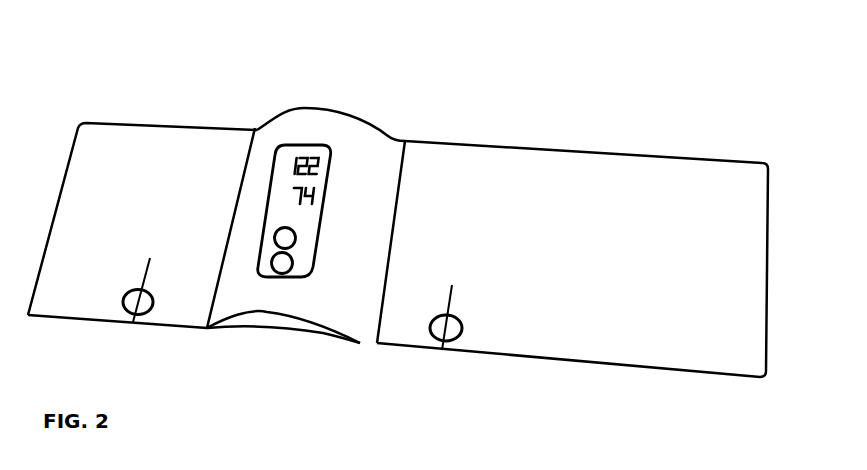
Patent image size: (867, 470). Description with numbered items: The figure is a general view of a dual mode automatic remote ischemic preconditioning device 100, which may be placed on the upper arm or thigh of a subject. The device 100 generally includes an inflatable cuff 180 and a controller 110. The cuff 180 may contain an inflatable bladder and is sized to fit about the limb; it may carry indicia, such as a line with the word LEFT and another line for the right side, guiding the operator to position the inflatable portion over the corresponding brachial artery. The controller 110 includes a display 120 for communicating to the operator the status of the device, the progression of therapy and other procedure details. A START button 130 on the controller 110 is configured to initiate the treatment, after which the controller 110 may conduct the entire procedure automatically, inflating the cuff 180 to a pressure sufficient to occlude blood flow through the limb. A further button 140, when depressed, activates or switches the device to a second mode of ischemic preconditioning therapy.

The device 100 is at (568, 116).
The controller 110 is at (380, 130).
The display 120 is at (290, 140).
The START button 130 is at (271, 263).
The button 140 is at (274, 237).
The inflatable cuff 180 is at (168, 127).